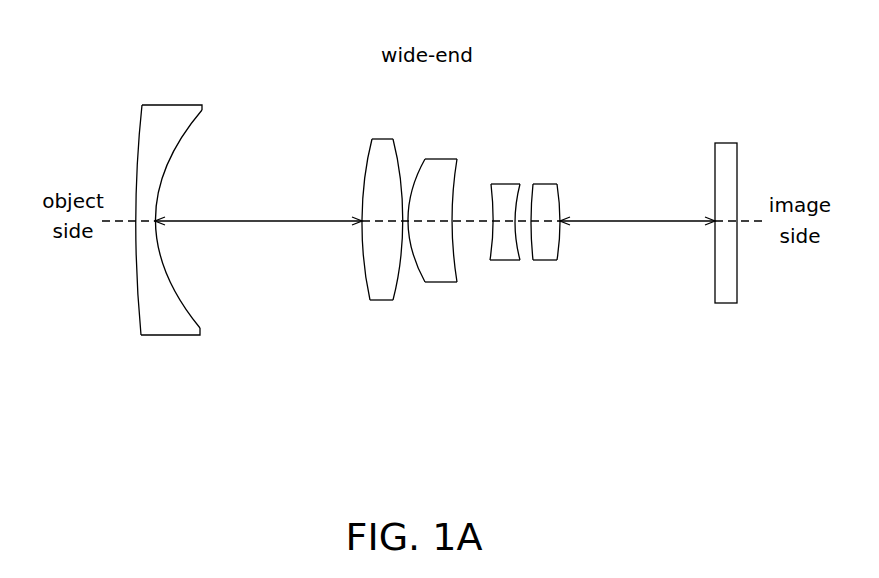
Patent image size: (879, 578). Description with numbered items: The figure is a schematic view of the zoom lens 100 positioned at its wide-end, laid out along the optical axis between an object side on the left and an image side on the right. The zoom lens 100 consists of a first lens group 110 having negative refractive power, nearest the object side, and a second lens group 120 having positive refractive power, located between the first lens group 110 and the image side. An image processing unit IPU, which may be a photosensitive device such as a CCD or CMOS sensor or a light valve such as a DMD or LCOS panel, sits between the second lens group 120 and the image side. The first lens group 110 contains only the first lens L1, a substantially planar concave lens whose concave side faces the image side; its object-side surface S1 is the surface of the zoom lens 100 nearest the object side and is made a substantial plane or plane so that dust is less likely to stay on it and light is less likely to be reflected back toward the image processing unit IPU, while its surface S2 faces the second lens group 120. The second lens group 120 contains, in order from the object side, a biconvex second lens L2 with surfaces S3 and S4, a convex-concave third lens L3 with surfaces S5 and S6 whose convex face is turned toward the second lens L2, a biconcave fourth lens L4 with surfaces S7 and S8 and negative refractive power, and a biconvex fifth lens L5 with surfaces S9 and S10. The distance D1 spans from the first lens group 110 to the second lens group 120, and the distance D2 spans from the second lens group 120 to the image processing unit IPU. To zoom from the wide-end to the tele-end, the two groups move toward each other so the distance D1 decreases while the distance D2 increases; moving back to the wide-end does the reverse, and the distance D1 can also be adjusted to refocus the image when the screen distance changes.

The zoom lens 100 is at (356, 261).
The first lens group 110 is at (169, 245).
The second lens group 120 is at (471, 259).
The first lens L1 is at (169, 225).
The second lens L2 is at (381, 239).
The third lens L3 is at (446, 252).
The fourth lens L4 is at (507, 258).
The fifth lens L5 is at (563, 252).
The surface of the first lens facing the object side S1 is at (142, 126).
The surface of the first lens facing the second lens group S2 is at (193, 128).
The object-side surface of the second lens S3 is at (371, 151).
The image-side surface of the second lens S4 is at (395, 151).
The object-side surface of the third lens S5 is at (417, 170).
The image-side surface of the third lens S6 is at (457, 171).
The surface of the fourth lens facing the third lens S7 is at (493, 196).
The surface of the fourth lens facing the fifth lens S8 is at (516, 200).
The object-side surface of the fifth lens S9 is at (532, 199).
The image-side surface of the fifth lens S10 is at (559, 200).
The distance between the first lens group and the second lens group D1 is at (258, 210).
The distance between the second lens group and the image processing unit D2 is at (637, 210).
The image processing unit IPU is at (727, 150).